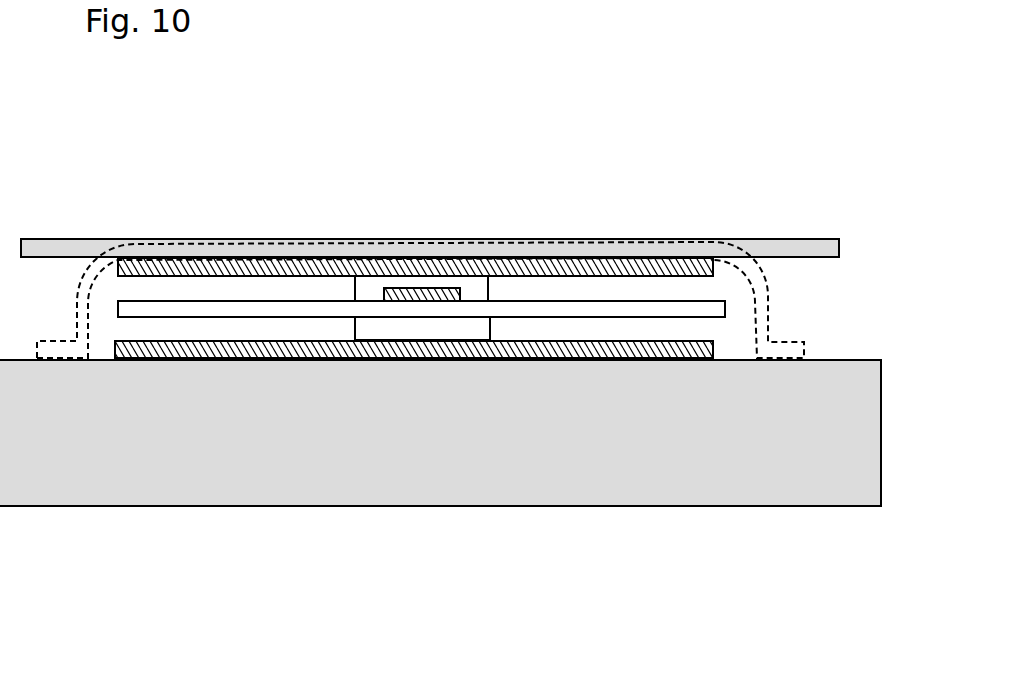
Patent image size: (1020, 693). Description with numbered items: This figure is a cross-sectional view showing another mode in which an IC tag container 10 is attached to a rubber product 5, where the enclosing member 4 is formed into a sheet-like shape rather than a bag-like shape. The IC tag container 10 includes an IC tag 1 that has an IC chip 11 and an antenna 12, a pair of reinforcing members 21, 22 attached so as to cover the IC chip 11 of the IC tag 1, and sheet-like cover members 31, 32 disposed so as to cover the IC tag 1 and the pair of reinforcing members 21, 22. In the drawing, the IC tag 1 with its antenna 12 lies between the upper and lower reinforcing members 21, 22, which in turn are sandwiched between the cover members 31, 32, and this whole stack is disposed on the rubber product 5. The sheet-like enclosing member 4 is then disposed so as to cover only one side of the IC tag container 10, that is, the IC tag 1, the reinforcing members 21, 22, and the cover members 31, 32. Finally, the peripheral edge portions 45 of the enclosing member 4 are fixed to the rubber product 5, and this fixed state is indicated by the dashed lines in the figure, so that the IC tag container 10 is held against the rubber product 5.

The IC tag container 10 is at (66, 226).
The IC tag 1 is at (738, 307).
The enclosing member 4 is at (757, 247).
The rubber product 5 is at (708, 497).
The IC chip 11 is at (435, 290).
The antenna 12 is at (172, 308).
The reinforcing member 21 is at (365, 287).
The reinforcing member 22 is at (468, 330).
The cover member 31 is at (265, 265).
The cover member 32 is at (205, 350).
The peripheral edge portions 45 is at (58, 340).